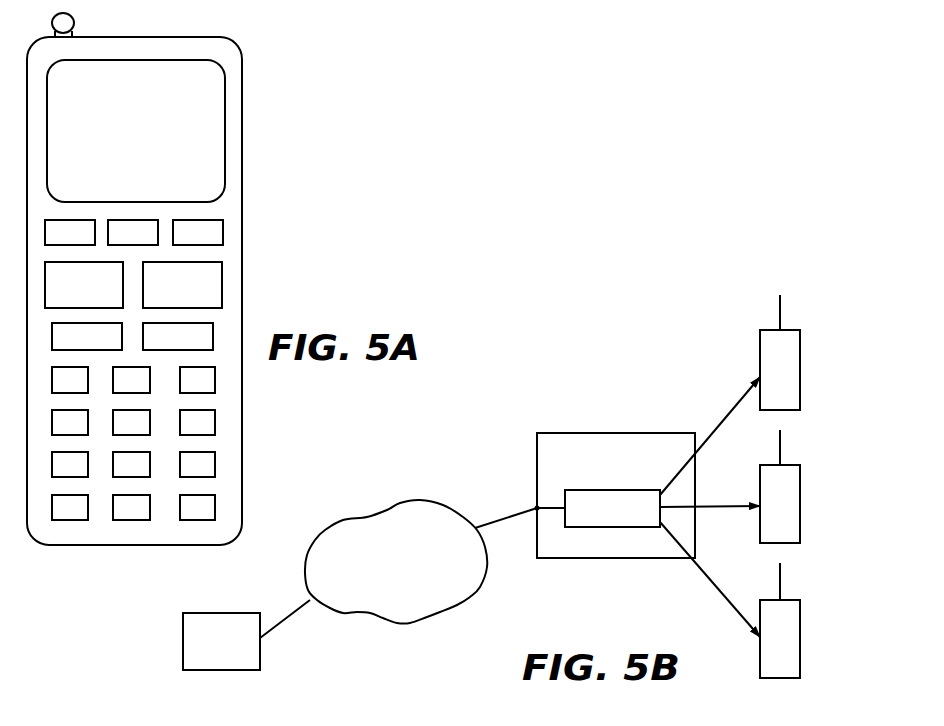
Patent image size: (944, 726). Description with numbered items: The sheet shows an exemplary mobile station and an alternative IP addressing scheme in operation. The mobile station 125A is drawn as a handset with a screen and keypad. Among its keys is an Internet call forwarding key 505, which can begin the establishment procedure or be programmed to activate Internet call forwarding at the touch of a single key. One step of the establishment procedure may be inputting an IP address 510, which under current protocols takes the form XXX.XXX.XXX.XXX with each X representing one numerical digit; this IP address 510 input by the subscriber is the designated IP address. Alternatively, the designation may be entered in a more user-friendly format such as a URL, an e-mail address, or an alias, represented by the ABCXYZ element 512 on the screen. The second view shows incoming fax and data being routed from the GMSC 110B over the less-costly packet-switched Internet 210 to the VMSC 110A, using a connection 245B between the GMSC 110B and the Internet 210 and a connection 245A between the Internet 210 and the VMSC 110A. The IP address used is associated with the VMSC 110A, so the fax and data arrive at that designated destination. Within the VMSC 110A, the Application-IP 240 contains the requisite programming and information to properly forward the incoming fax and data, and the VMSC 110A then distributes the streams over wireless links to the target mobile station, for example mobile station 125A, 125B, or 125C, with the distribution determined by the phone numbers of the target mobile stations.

In FIG. 5A, the mobile station 125A is at (243, 86).
In FIG. 5B, the mobile station 125A is at (800, 378).
In FIG. 5B, the mobile station 125B is at (800, 513).
In FIG. 5B, the mobile station 125C is at (800, 647).
In FIG. 5A, the IP address 510 is at (215, 150).
In FIG. 5A, the ABCXYZ element 512 is at (200, 172).
In FIG. 5A, the Internet call forwarding key 505 is at (222, 275).
In FIG. 5B, the VMSC 110A is at (650, 433).
In FIG. 5B, the GMSC 110B is at (220, 670).
In FIG. 5B, the Application-IP 240 is at (598, 527).
In FIG. 5B, the connection 245A is at (505, 518).
In FIG. 5B, the connection 245B is at (290, 618).
In FIG. 5B, the Internet 210 is at (427, 615).